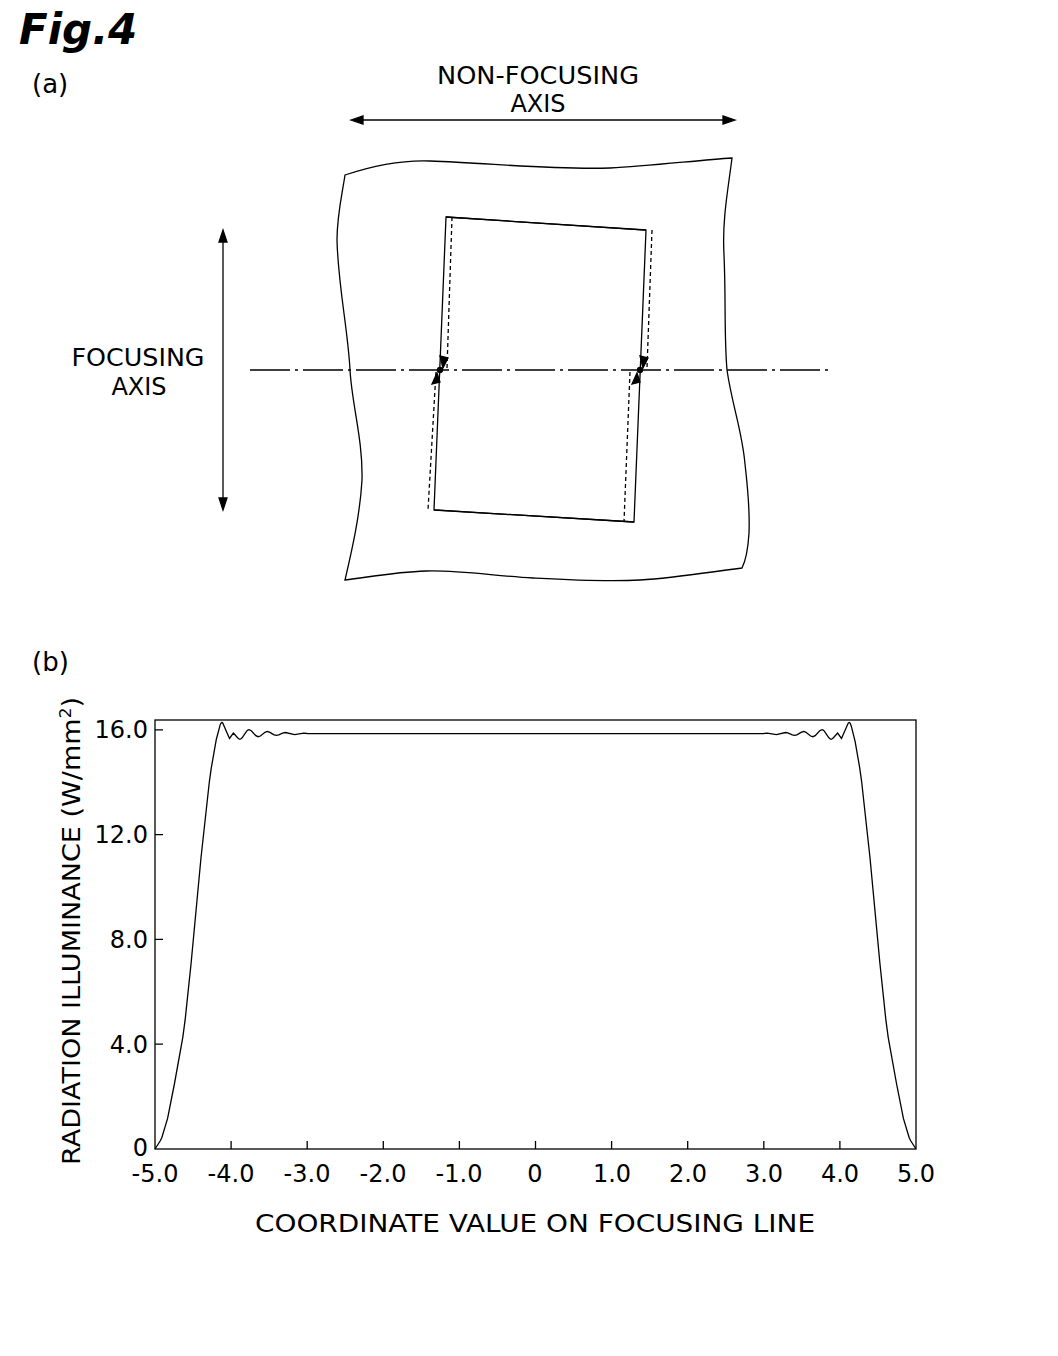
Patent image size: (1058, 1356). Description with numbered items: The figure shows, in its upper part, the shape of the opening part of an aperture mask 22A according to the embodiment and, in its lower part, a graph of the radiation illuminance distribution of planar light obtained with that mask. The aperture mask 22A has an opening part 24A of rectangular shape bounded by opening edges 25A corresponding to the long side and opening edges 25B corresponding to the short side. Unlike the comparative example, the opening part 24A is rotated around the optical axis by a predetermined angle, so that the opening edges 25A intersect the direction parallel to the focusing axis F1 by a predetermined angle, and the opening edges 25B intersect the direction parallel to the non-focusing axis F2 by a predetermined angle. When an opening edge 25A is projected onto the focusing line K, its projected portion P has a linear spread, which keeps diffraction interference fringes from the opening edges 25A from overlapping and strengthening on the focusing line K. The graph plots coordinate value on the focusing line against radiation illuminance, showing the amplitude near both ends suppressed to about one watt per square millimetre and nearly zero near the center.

The aperture mask 22A is at (322, 176).
The opening part 24A is at (650, 214).
The opening edges 25A is at (440, 415).
The opening edges 25B is at (536, 225).
The projected portion P is at (436, 362).
The focusing line K is at (812, 368).
The focusing axis F1 is at (222, 287).
The non-focusing axis direction F2 is at (672, 118).